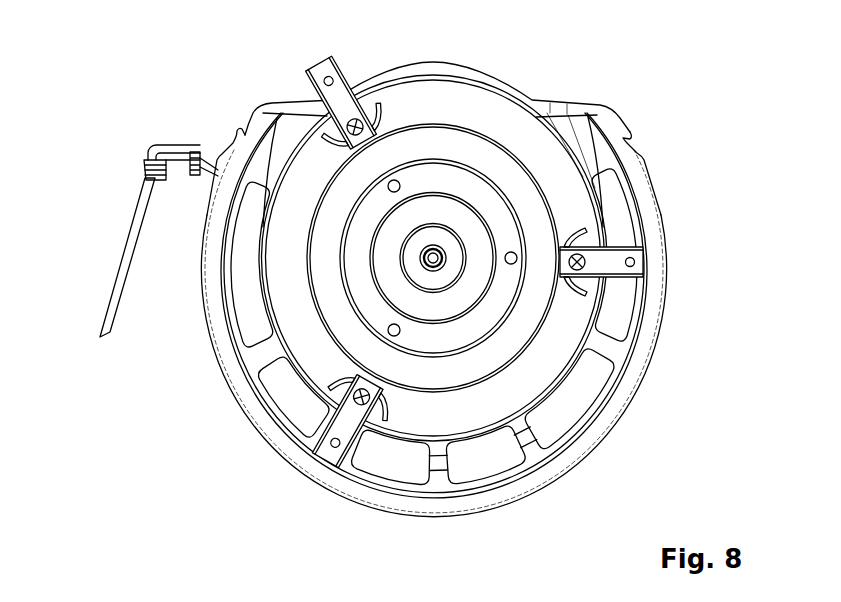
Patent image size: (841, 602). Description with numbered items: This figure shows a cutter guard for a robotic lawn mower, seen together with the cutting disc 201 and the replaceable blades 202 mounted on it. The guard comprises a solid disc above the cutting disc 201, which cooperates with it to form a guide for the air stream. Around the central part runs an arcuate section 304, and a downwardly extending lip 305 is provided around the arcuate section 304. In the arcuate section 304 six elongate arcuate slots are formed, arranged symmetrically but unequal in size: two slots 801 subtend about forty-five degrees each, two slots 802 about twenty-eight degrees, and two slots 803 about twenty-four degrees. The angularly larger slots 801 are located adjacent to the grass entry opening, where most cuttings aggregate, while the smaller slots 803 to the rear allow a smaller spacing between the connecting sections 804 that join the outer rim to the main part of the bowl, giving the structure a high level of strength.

The cutting disc 201 is at (514, 117).
The replaceable blades 202 is at (328, 62).
The arcuate section 304 is at (590, 162).
The downwardly extending lip 305 is at (662, 213).
The slots 801 is at (241, 316).
The slots 802 is at (280, 398).
The slots 803 is at (392, 472).
The connecting sections 804 is at (439, 472).